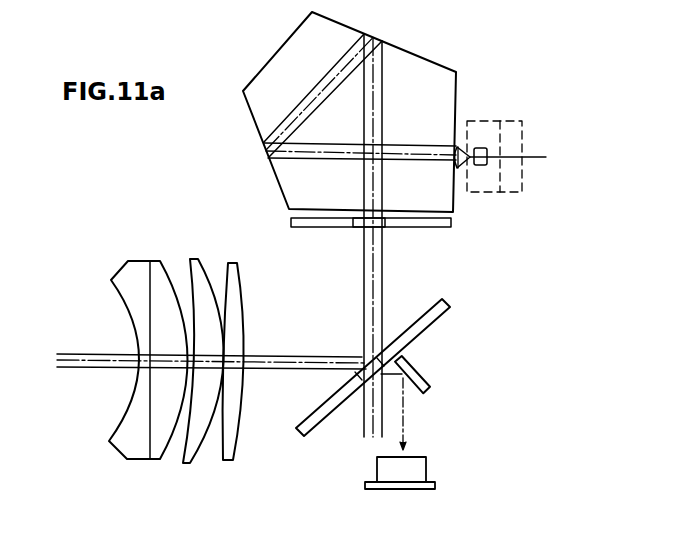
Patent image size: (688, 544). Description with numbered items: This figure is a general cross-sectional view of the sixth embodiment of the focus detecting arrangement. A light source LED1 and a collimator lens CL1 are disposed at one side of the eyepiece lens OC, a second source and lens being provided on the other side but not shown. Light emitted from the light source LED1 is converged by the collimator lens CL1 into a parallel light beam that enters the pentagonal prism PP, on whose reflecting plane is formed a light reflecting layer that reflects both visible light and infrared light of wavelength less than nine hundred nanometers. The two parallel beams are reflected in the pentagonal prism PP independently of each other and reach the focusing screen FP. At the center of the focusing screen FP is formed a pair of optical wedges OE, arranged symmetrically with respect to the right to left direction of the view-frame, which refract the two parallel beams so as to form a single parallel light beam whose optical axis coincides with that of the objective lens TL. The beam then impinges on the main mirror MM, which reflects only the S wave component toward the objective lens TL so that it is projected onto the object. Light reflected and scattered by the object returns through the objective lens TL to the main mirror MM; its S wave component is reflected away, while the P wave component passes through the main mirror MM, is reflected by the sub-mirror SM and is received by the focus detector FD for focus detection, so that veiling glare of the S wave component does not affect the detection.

The pentagonal prism PP is at (433, 60).
The eyepiece lens OC is at (521, 121).
The light source LED1 is at (487, 168).
The collimator lens CL1 is at (459, 170).
The focusing screen FP is at (290, 219).
The optical wedges OE is at (358, 230).
The objective lens TL is at (158, 260).
The main mirror MM is at (431, 303).
The sub-mirror SM is at (432, 384).
The focus detector FD is at (420, 466).